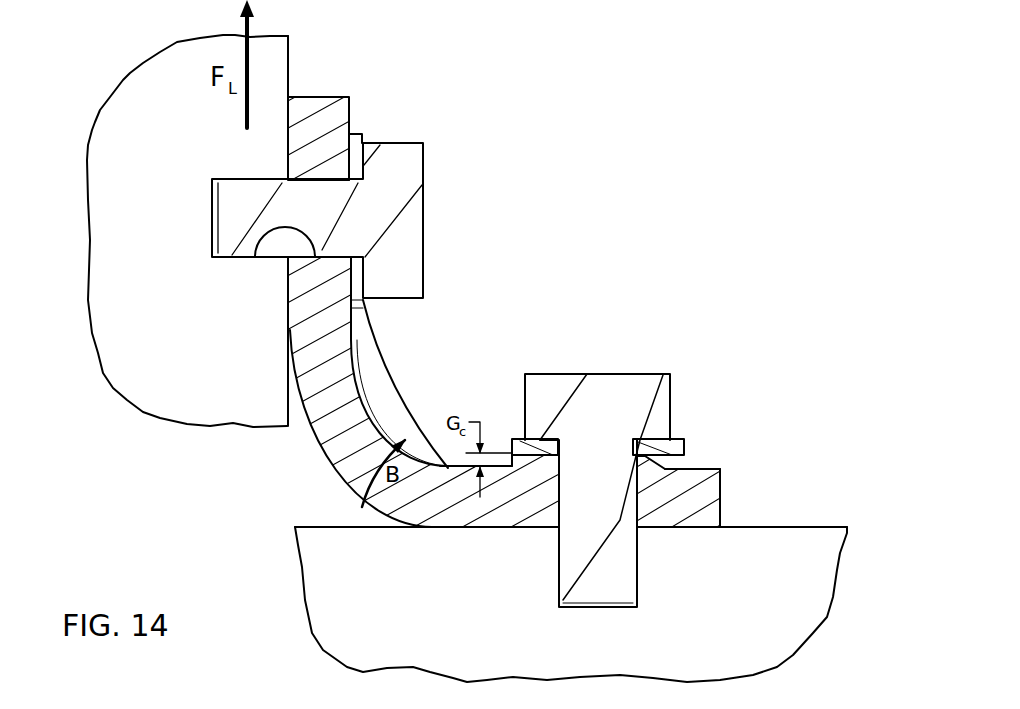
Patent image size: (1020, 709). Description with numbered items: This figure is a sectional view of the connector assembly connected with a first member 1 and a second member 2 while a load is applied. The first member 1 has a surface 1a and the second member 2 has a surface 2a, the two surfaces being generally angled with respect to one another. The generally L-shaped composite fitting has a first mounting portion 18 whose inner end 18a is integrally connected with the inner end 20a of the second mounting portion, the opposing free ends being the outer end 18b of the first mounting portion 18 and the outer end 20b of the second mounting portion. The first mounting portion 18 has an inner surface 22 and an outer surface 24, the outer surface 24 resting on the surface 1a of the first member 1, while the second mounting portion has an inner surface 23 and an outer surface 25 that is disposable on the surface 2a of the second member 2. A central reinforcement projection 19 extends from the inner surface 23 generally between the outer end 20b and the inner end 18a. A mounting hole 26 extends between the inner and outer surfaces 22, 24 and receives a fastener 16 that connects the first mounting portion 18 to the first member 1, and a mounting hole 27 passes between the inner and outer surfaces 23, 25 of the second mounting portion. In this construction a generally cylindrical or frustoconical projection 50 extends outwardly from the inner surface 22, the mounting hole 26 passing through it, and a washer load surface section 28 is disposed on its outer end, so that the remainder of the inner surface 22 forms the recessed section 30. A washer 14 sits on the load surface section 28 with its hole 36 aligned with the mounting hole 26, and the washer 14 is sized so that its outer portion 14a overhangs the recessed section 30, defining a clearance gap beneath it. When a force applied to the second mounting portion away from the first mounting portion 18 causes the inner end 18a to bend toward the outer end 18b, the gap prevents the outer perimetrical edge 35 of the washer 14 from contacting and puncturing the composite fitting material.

The first member 1 is at (800, 593).
The surface of first member 1a is at (327, 530).
The second member 2 is at (105, 115).
The surface of second member 2a is at (296, 57).
The washer 14 is at (680, 434).
The outer portion of washer 14a is at (520, 439).
The fastener 16 is at (428, 165).
The first mounting portion 18 is at (760, 505).
The inner end of first mounting portion 18a is at (357, 469).
The outer free end of first mounting portion 18b is at (722, 493).
The central reinforcement projection 19 is at (390, 372).
The inner end of second mounting portion 20a is at (350, 438).
The outer free end of second mounting portion 20b is at (320, 100).
The inner surface of first mounting portion 22 is at (700, 464).
The inner surface of second mounting portion 23 is at (357, 340).
The outer surface of first mounting portion 24 is at (675, 530).
The outer surface of second mounting portion 25 is at (290, 293).
The mounting hole of first mounting portion 26 is at (562, 495).
The mounting hole of second mounting portion 27 is at (262, 258).
The washer load surface section 28 is at (556, 438).
The recessed section 30 is at (449, 462).
The outer perimetrical edge of washer 35 is at (513, 456).
The washer hole 36 is at (565, 449).
The projection 50 is at (645, 458).